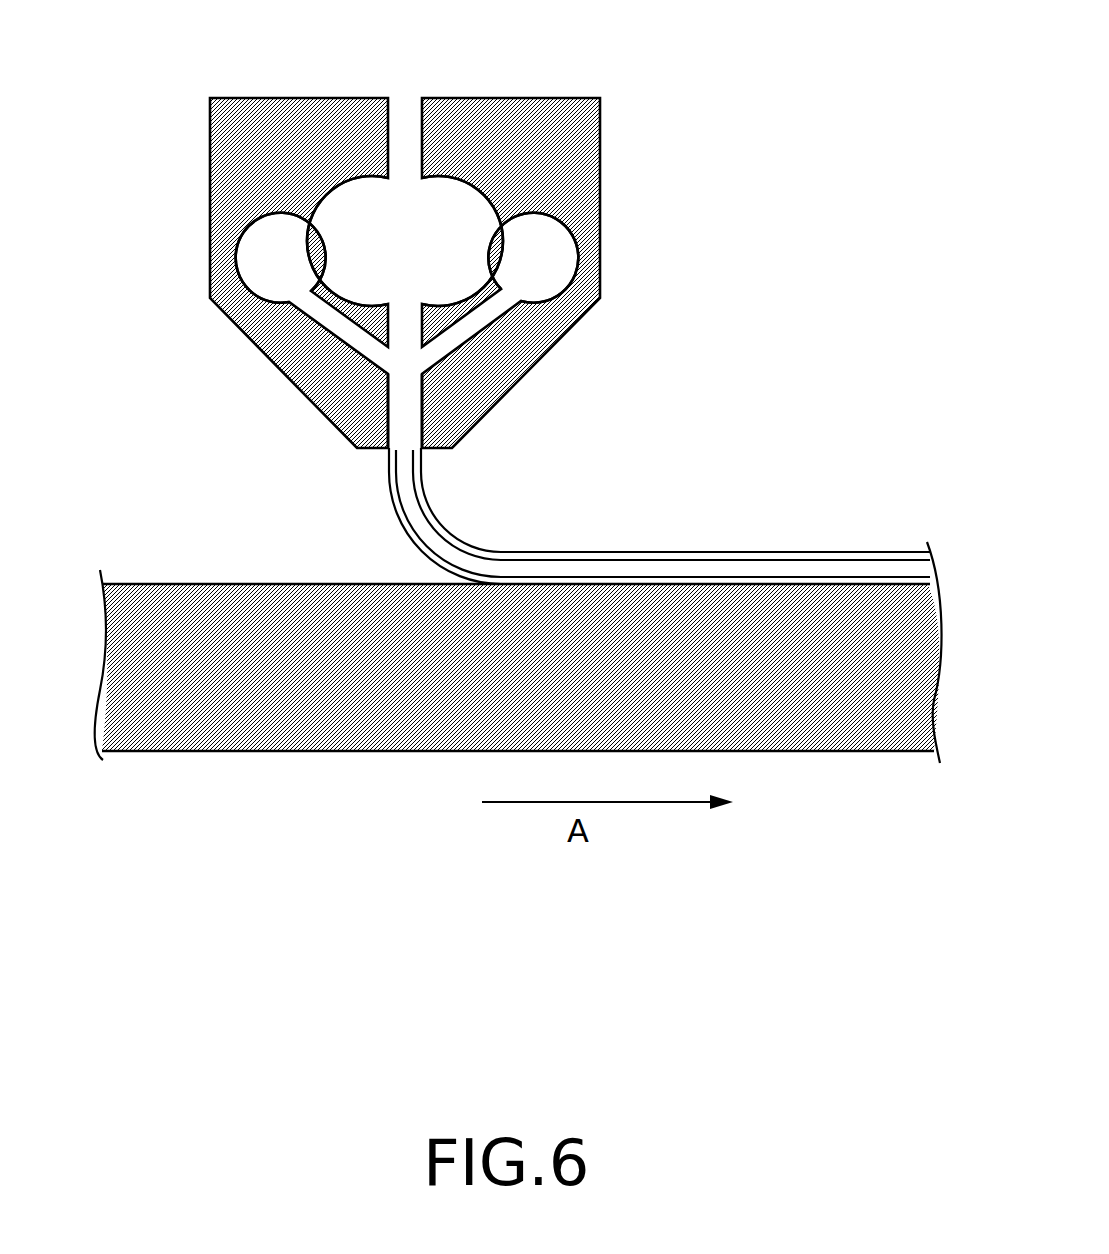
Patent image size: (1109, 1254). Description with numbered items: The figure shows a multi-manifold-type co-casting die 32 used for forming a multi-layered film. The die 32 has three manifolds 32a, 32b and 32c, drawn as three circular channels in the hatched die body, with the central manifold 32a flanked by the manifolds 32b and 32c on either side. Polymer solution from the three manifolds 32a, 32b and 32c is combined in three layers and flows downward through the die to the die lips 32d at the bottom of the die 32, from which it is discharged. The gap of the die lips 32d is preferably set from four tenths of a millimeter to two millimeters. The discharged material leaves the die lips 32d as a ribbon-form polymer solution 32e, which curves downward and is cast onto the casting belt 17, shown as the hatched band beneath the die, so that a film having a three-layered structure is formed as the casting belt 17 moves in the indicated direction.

The multi-manifold-type co-casting die 32 is at (627, 107).
The manifold 32a is at (413, 208).
The manifold 32b is at (548, 277).
The manifold 32c is at (253, 253).
The die lips 32d is at (423, 450).
The ribbon-form polymer solution 32e is at (483, 538).
The casting belt 17 is at (155, 615).